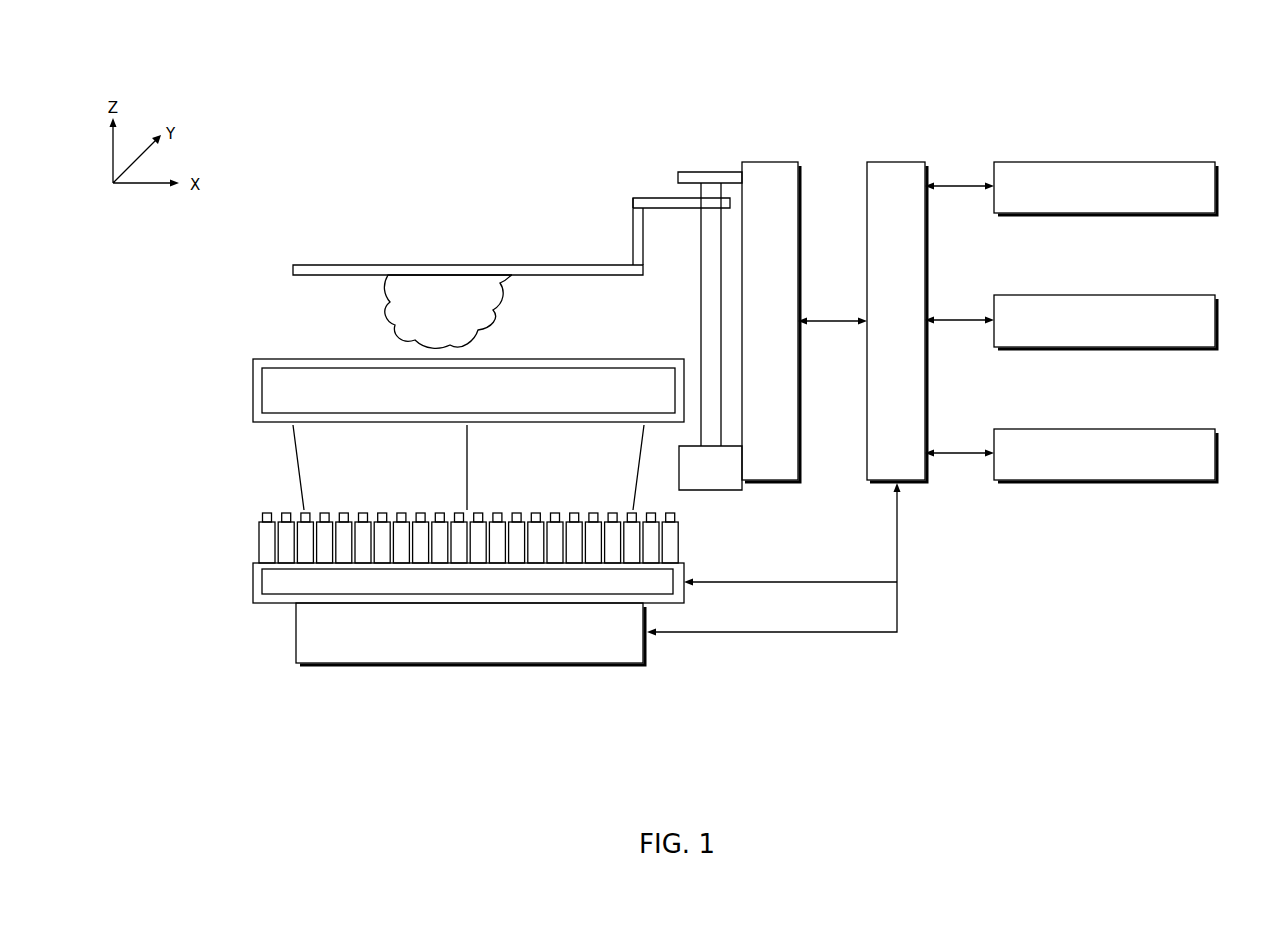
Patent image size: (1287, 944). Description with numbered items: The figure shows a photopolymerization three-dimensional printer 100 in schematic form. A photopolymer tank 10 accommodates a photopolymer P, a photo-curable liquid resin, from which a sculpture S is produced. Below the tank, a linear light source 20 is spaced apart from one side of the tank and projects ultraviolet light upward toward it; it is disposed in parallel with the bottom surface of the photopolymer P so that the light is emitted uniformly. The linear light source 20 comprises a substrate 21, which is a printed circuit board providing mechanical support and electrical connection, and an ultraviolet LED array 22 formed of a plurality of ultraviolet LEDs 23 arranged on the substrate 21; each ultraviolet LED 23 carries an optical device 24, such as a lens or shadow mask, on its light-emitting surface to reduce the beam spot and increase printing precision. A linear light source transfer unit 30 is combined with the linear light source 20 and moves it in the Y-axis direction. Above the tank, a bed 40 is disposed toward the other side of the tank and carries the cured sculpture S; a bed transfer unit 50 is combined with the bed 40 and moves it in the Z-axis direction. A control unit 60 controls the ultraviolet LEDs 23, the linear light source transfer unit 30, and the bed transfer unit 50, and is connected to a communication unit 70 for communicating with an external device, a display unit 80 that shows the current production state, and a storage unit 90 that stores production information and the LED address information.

The photopolymerization 3D printer 100 is at (1010, 64).
The photopolymer tank 10 is at (254, 400).
The photopolymer P is at (282, 385).
The sculpture S is at (390, 301).
The linear light source 20 is at (125, 524).
The substrate 21 is at (257, 583).
The ultraviolet LED array 22 is at (176, 504).
The ultraviolet LED 23 is at (262, 541).
The optical device 24 is at (267, 512).
The linear light source transfer unit 30 is at (465, 666).
The bed 40 is at (338, 264).
The bed transfer unit 50 is at (769, 161).
The control unit 60 is at (896, 161).
The communication unit 70 is at (1106, 161).
The display unit 80 is at (1106, 294).
The storage unit 90 is at (1106, 428).